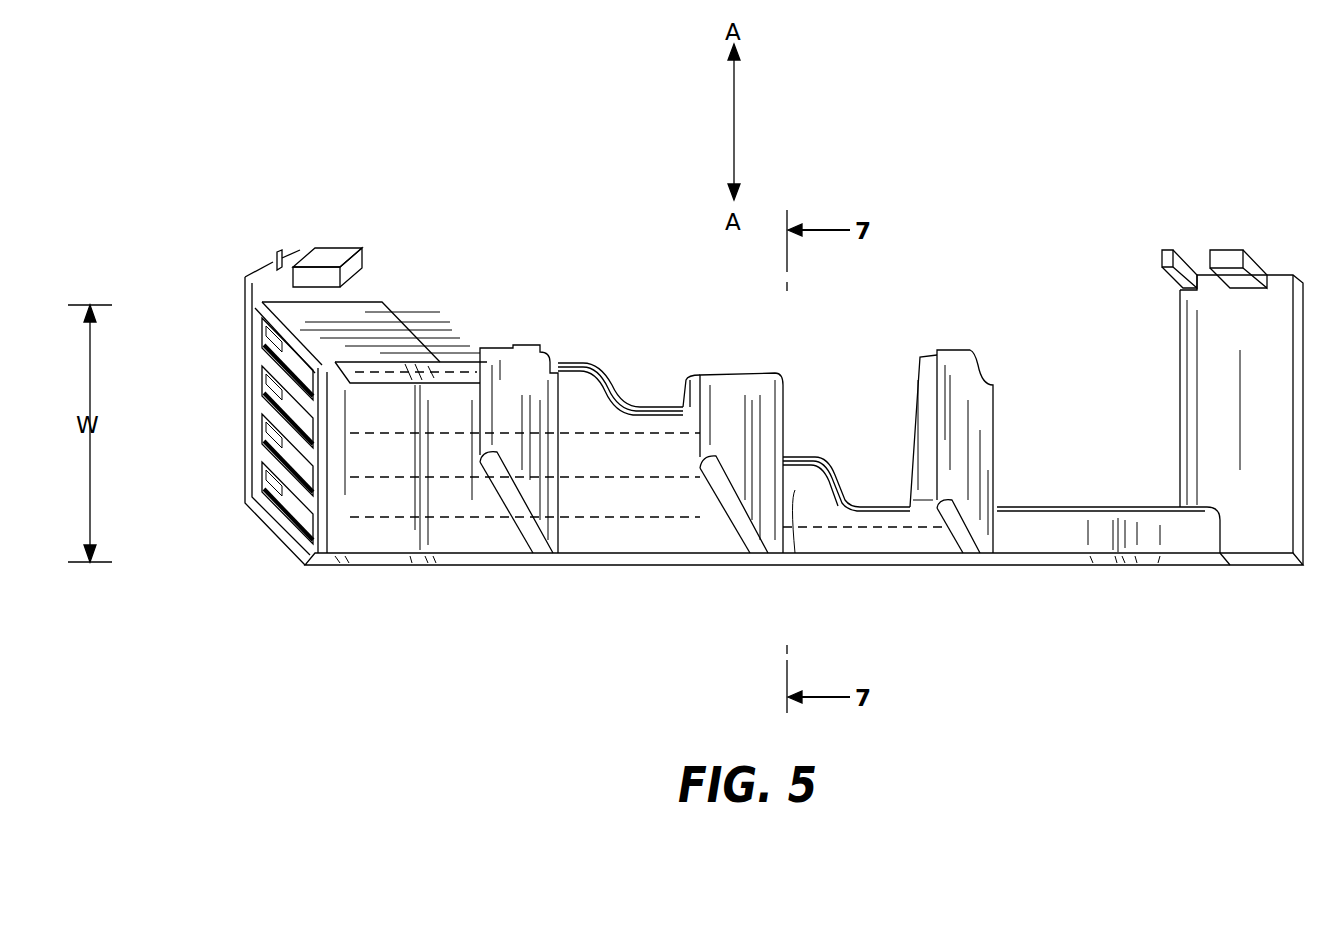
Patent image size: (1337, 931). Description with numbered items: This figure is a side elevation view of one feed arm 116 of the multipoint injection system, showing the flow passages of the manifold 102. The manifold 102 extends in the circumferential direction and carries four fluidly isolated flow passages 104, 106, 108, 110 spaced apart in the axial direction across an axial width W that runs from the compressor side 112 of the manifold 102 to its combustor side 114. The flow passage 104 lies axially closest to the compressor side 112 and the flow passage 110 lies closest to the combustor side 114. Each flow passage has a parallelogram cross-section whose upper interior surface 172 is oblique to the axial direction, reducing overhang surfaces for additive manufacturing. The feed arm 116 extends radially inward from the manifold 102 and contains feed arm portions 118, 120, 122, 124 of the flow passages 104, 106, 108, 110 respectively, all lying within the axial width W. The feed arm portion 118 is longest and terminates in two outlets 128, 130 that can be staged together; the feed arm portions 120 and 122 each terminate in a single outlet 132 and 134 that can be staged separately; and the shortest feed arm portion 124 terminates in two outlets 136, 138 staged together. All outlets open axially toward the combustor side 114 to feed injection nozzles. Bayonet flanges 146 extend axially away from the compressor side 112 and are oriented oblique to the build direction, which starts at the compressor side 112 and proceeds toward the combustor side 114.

The manifold 102 is at (400, 368).
The flow passage 104 is at (267, 495).
The flow passage 106 is at (267, 447).
The flow passage 108 is at (273, 390).
The flow passage 110 is at (273, 343).
The compressor side 112 is at (306, 566).
The combustor side 114 is at (405, 338).
The feed arm 116 is at (452, 156).
The feed arm portion 118 is at (885, 527).
The feed arm portion 120 is at (793, 488).
The feed arm portion 122 is at (650, 460).
The feed arm portion 124 is at (455, 395).
The outlet opening 128 is at (957, 350).
The outlet 130 is at (922, 358).
The outlet opening 132 is at (730, 372).
The outlet opening 134 is at (688, 375).
The outlet opening 136 is at (482, 348).
The outlet 138 is at (530, 350).
The bayonet flange 146 is at (280, 250).
The upper interior surface 172 is at (273, 363).